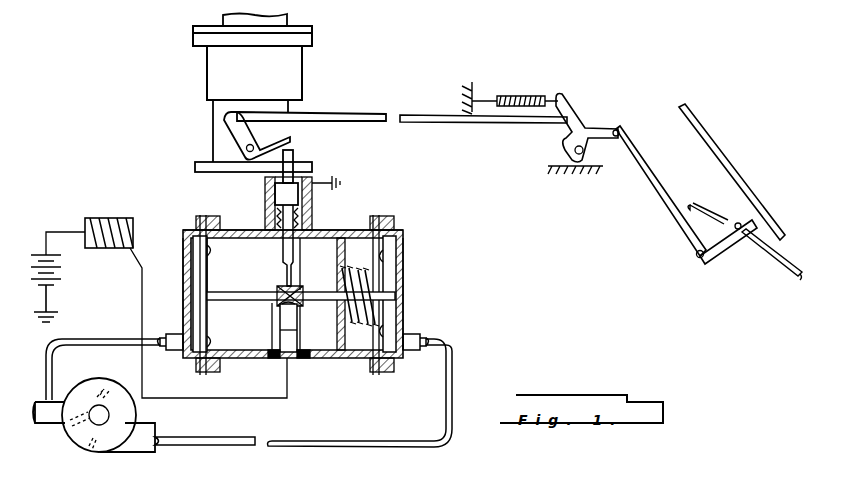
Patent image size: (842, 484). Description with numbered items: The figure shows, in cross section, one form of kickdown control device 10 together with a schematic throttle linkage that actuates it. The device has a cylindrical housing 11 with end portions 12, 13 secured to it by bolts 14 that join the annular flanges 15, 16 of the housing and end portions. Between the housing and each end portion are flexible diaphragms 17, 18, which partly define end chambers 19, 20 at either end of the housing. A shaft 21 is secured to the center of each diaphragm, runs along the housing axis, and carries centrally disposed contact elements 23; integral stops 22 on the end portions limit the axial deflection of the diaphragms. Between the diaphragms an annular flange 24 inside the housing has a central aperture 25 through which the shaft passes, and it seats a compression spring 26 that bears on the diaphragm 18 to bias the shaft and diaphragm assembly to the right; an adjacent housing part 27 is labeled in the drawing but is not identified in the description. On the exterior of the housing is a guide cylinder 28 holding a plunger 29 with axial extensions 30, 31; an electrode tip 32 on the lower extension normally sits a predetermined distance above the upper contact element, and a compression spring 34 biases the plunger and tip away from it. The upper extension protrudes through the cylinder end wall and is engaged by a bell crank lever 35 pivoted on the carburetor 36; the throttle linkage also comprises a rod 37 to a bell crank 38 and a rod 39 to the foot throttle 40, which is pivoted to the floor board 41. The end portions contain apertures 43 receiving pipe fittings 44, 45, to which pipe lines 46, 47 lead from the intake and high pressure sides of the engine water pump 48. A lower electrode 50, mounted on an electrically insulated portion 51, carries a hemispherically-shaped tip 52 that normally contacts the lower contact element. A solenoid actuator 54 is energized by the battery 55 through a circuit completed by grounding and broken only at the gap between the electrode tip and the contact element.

The kickdown control device 10 is at (413, 255).
The cylindrical housing 11 is at (343, 233).
The end portion 12 is at (184, 258).
The end portion 13 is at (401, 302).
The bolt 14 is at (396, 222).
The annular flange 15 is at (208, 228).
The annular flange 16 is at (207, 218).
The flexible diaphragm 17 is at (214, 325).
The flexible diaphragm 18 is at (378, 336).
The end chamber 19 is at (193, 306).
The end chamber 20 is at (398, 325).
The shaft 21 is at (252, 296).
The integral stop 22 is at (214, 276).
The contact element 23 is at (295, 296).
The annular flange 24 is at (334, 258).
The central aperture 25 is at (281, 312).
The compression spring 26 is at (364, 275).
The wall portion 27 is at (400, 282).
The guide cylinder 28 is at (300, 204).
The plunger 29 is at (266, 204).
The axial extension 30 is at (296, 160).
The axial extension 31 is at (283, 258).
The electrode tip 32 is at (296, 290).
The compression spring 34 is at (300, 222).
The bell crank lever 35 is at (289, 141).
The carburetor 36 is at (198, 84).
The rod 37 is at (437, 104).
The bell crank 38 is at (590, 124).
The rod 39 is at (659, 178).
The foot throttle 40 is at (737, 262).
The floor board 41 is at (786, 278).
The aperture 43 is at (174, 352).
The pipe fitting 44 is at (176, 334).
The pipe fitting 45 is at (423, 337).
The pipe line 46 is at (60, 357).
The pipe line 47 is at (370, 448).
The engine water pump 48 is at (110, 452).
The lower electrode 50 is at (298, 339).
The electrically insulated portion 51 is at (290, 358).
The hemispherically-shaped tip 52 is at (282, 326).
The solenoid actuator 54 is at (112, 206).
The battery 55 is at (71, 280).